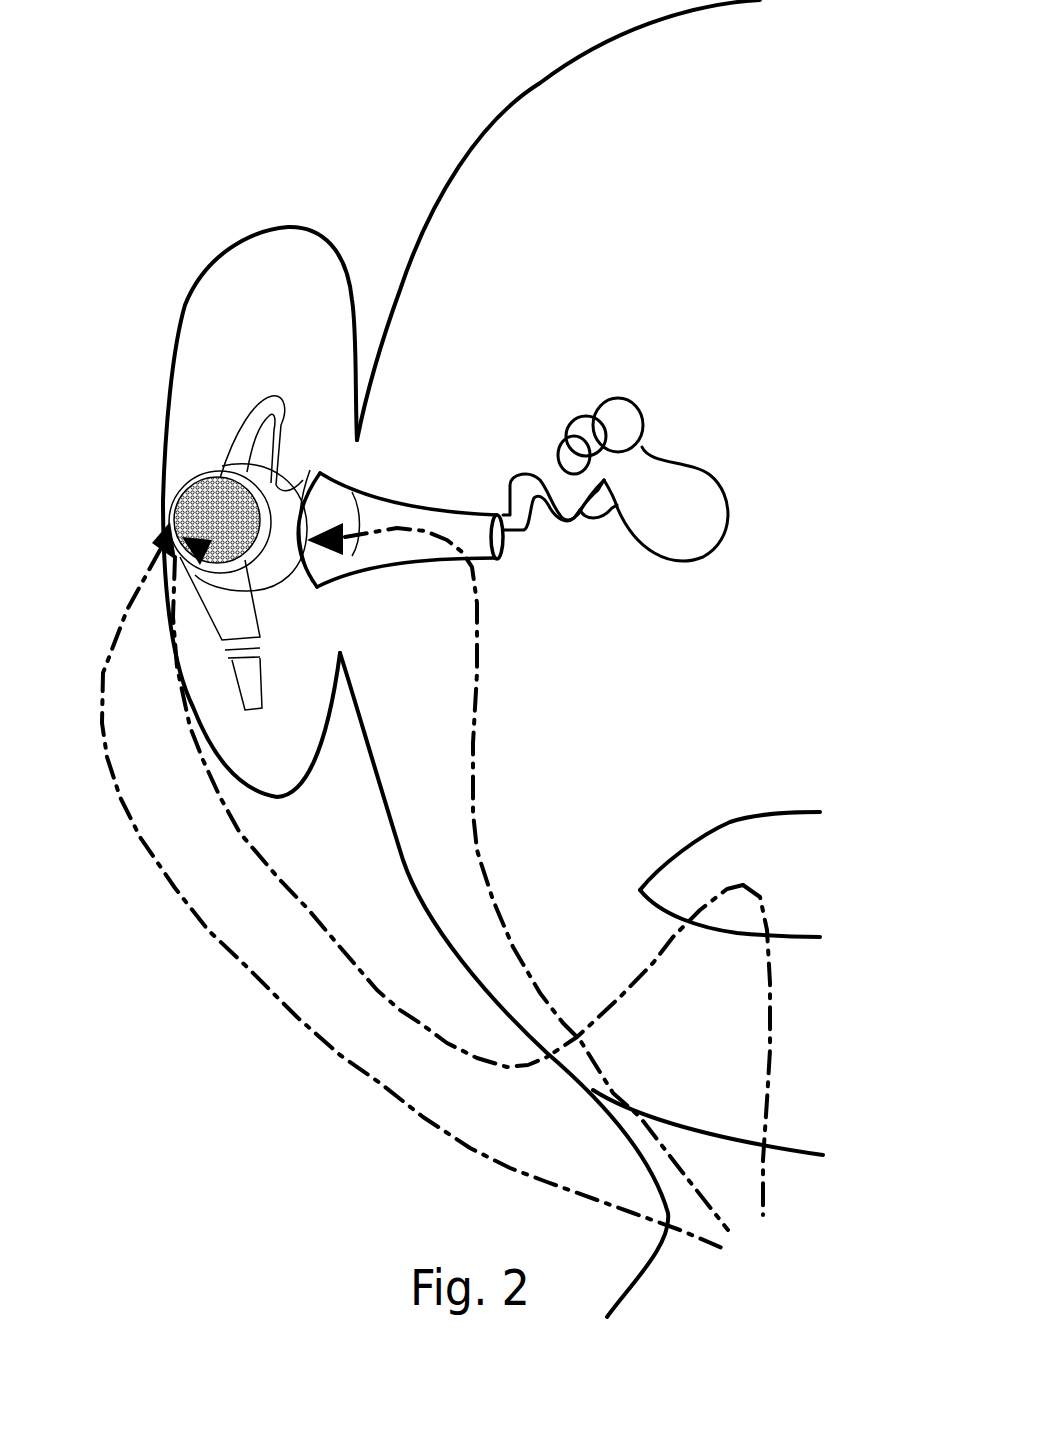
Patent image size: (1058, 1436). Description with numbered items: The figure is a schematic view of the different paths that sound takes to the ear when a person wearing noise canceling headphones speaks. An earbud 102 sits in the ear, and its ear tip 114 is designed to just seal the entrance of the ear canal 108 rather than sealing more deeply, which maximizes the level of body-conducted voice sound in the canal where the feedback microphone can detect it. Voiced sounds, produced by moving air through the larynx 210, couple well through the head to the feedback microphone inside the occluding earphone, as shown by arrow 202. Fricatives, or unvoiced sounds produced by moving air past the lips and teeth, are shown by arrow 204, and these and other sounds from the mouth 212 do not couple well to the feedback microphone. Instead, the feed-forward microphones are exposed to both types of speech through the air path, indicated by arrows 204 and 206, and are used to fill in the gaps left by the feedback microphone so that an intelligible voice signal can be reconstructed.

The earbud 102 is at (210, 472).
The ear tip 114 is at (323, 500).
The ear canal 108 is at (412, 508).
The body-conducted voice sounds 202 is at (473, 827).
The fricatives 204 is at (330, 947).
The air path sound 206 is at (237, 963).
The larynx 210 is at (784, 1266).
The mouth 212 is at (813, 840).